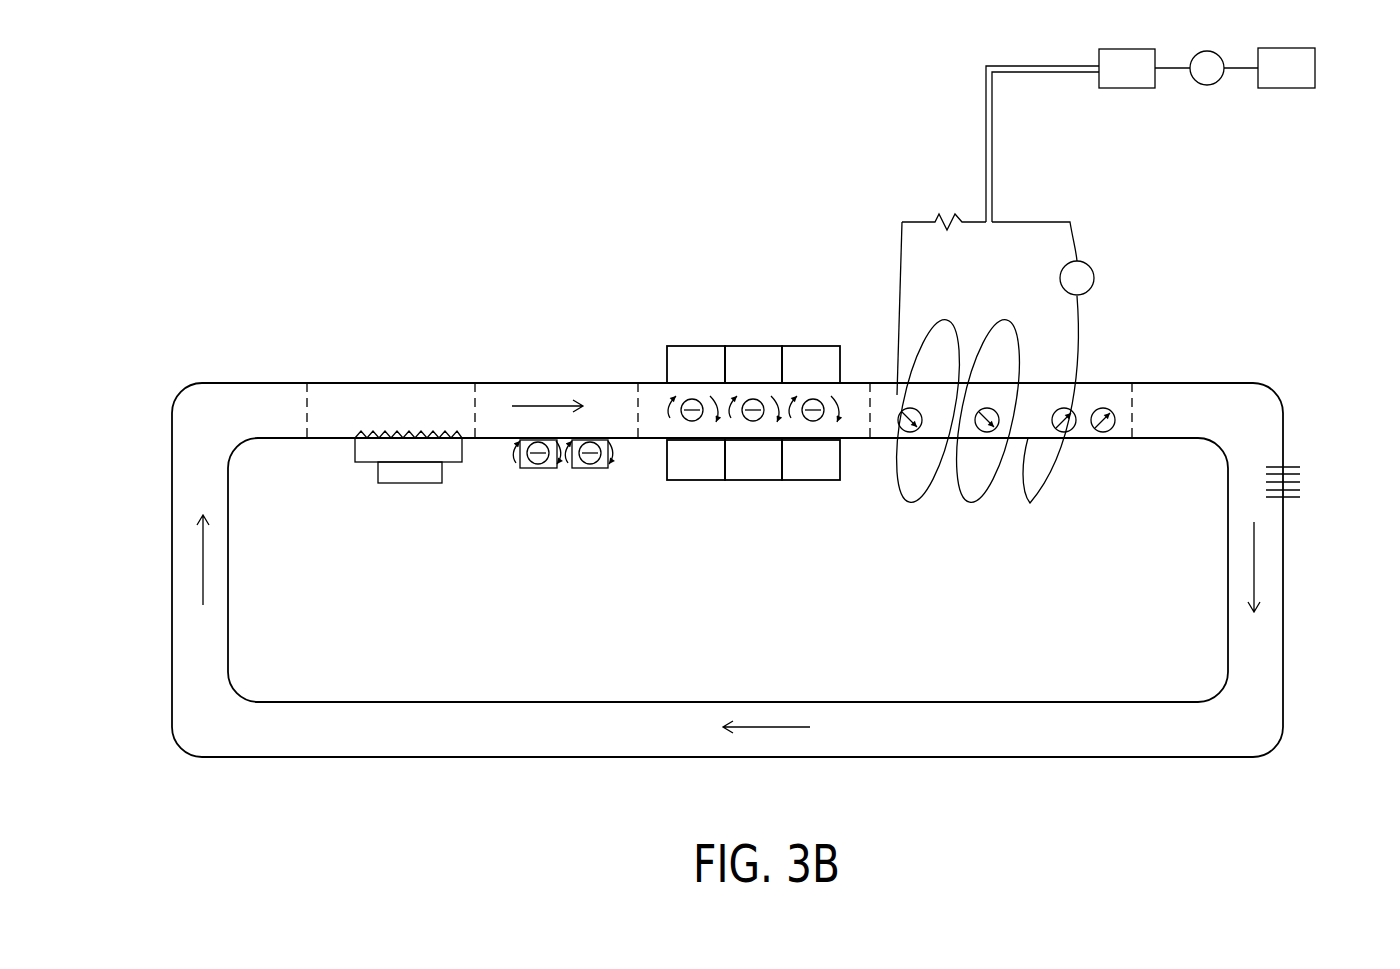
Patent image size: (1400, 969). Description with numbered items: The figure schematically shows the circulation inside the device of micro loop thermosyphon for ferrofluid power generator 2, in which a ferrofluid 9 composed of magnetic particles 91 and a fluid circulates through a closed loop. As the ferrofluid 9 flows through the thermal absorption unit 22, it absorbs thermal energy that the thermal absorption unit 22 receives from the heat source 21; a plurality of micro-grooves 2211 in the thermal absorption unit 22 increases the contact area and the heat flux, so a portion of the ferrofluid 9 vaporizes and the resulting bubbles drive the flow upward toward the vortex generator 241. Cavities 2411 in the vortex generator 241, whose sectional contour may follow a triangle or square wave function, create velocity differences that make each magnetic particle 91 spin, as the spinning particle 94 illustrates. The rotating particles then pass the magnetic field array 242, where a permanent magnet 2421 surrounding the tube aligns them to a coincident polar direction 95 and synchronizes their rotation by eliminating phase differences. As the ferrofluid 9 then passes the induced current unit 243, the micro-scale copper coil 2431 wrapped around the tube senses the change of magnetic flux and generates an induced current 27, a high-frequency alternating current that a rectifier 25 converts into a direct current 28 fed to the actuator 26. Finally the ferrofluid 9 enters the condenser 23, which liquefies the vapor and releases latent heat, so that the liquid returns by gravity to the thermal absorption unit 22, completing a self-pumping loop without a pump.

The device of micro loop thermosyphon for ferrofluid power generator 2 is at (146, 303).
The ferrofluid 9 is at (203, 561).
The heat source 21 is at (455, 455).
The thermal absorption unit 22 is at (386, 421).
The condenser 23 is at (1300, 467).
The rectifier 25 is at (1126, 88).
The actuator 26 is at (1285, 88).
The induced current 27 is at (1094, 278).
The direct current 28 is at (1207, 85).
The magnetic particle 91 is at (590, 458).
The spinning magnetic particle 94 is at (607, 453).
The coincident polar direction 95 is at (815, 422).
The vortex generator 241 is at (585, 406).
The magnetic field array 242 is at (778, 376).
The induced current unit 243 is at (973, 335).
The micro-grooves 2211 is at (402, 436).
The cavity 2411 is at (532, 468).
The permanent magnet 2421 is at (826, 478).
The micro-scale copper coil 2431 is at (990, 480).